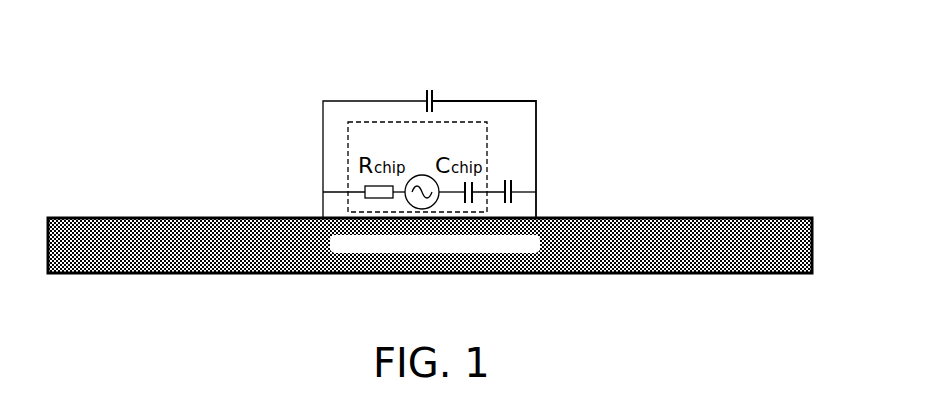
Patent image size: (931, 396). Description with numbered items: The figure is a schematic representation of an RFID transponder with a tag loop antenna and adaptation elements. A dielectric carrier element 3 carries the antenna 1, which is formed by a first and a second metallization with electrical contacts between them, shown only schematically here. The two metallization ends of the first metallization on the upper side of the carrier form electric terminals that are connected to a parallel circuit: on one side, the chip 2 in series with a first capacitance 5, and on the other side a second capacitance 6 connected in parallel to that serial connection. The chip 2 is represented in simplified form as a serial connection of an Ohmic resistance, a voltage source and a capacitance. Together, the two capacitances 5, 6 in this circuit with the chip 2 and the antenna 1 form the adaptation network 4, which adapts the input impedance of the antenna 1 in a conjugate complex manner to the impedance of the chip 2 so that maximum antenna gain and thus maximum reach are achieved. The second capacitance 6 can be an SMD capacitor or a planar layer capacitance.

The antenna 1 is at (632, 274).
The chip 2 is at (468, 119).
The dielectric carrier element 3 is at (153, 302).
The adaptation network 4 is at (561, 108).
The first capacitance 5 is at (521, 181).
The second capacitance 6 is at (439, 60).